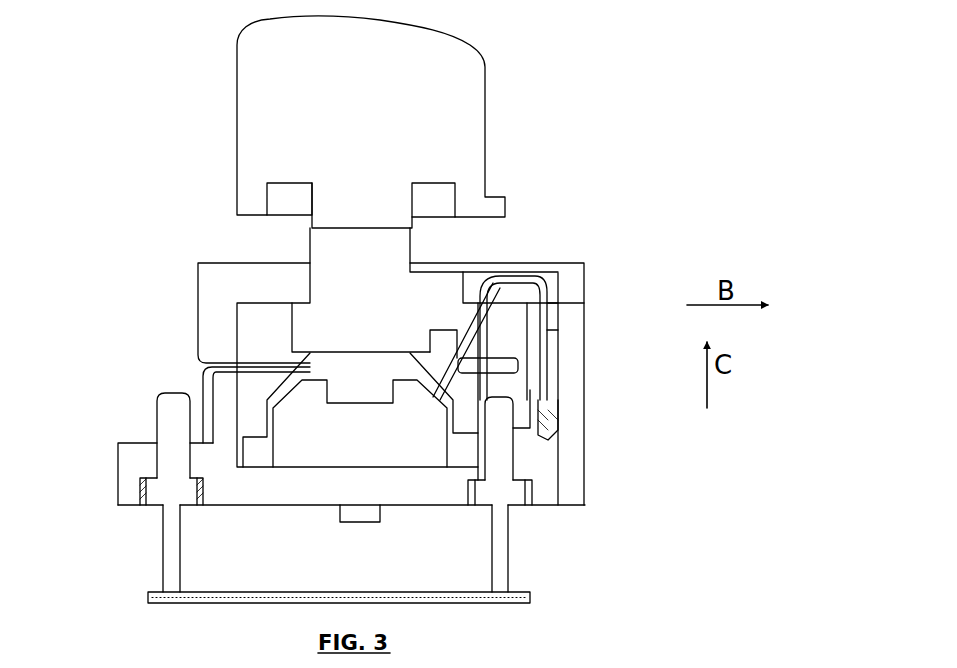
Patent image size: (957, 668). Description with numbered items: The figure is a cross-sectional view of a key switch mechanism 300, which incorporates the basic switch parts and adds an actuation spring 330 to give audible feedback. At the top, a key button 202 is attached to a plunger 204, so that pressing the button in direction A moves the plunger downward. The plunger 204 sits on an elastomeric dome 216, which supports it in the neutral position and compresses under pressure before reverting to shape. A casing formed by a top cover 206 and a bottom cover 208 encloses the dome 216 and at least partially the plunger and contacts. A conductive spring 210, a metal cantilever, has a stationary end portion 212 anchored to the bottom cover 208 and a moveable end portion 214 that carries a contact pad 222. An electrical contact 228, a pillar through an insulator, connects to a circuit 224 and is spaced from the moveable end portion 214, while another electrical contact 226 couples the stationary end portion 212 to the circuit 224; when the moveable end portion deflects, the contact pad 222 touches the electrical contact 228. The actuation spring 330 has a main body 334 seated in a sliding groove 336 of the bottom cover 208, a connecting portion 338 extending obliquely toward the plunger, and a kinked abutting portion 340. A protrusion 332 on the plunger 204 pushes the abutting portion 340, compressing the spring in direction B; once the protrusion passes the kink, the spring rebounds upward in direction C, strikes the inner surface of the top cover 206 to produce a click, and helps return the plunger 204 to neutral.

The key switch mechanism 300 is at (670, 67).
The key button 202 is at (237, 98).
The plunger 204 is at (310, 253).
The top cover 206 is at (550, 263).
The bottom cover 208 is at (303, 505).
The conductive spring 210 is at (201, 400).
The stationary end portion 212 is at (147, 443).
The moveable end portion 214 is at (263, 367).
The dome 216 is at (370, 400).
The contact pad 222 is at (503, 360).
The circuit 224 is at (532, 598).
The electrical contact 226 is at (165, 555).
The electrical contact 228 is at (510, 557).
The actuation spring 330 is at (552, 296).
The protrusion 332 is at (462, 310).
The main body 334 is at (547, 430).
The sliding groove 336 is at (557, 350).
The connecting portion 338 is at (522, 277).
The abutting portion 340 is at (473, 303).